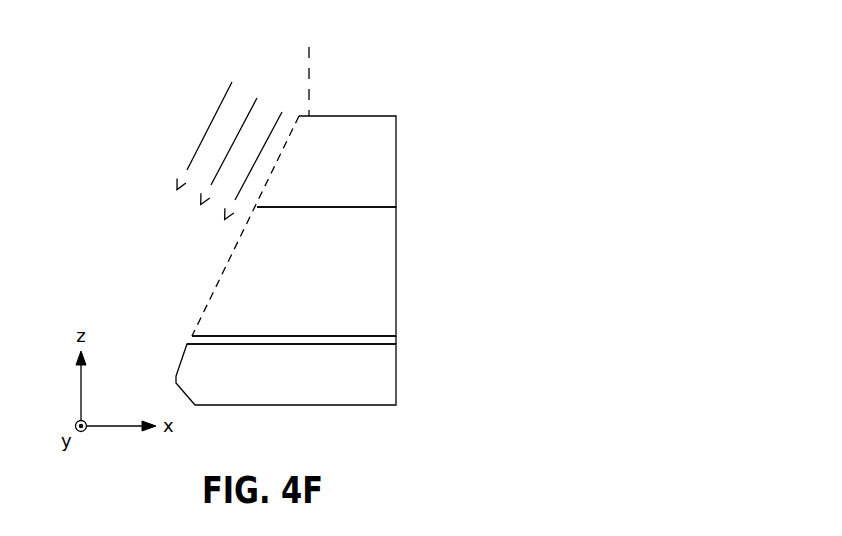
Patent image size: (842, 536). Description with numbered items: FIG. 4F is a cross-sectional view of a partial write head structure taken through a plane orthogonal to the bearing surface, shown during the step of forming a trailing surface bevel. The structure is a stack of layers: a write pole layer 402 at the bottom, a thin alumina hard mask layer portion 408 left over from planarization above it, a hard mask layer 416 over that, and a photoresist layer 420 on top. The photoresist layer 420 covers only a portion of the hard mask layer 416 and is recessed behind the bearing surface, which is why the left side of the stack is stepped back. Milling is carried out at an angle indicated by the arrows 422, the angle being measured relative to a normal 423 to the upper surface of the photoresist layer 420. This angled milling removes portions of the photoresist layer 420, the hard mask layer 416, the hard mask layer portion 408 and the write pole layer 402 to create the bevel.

The write pole layer 402 is at (380, 378).
The hard mask layer portion 408 is at (383, 341).
The hard mask layer 416 is at (313, 290).
The photoresist layer 420 is at (355, 167).
The arrows 422 is at (462, 74).
The normal 423 is at (309, 57).